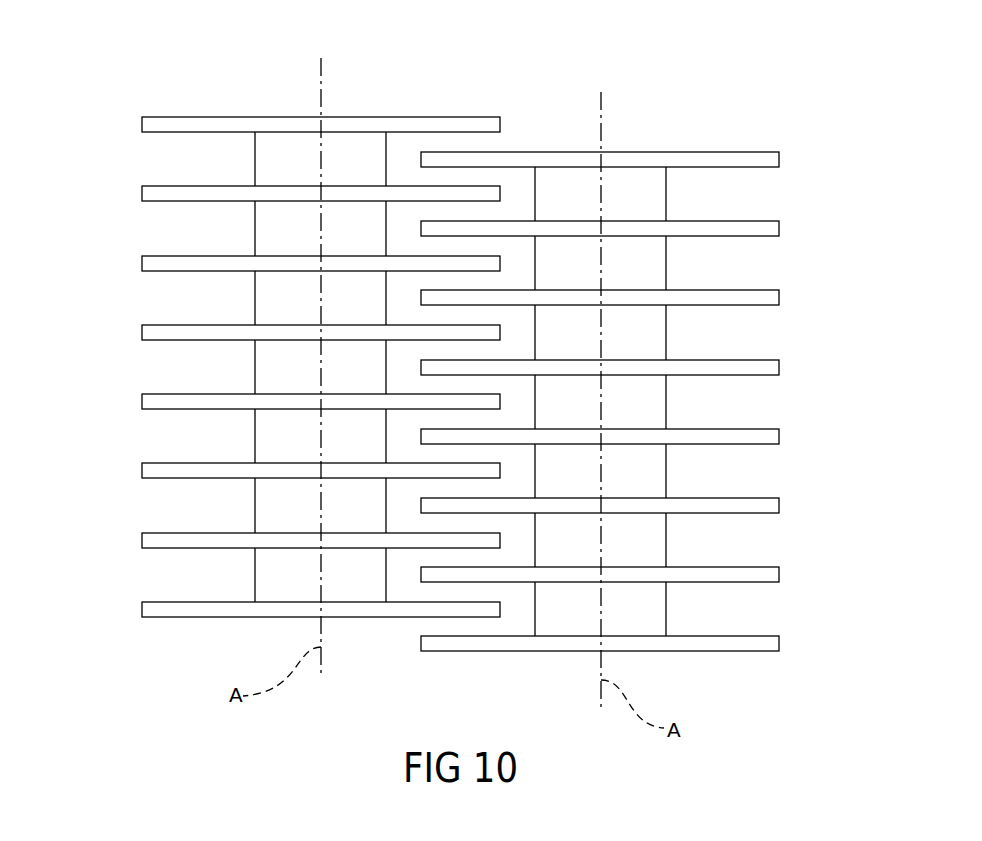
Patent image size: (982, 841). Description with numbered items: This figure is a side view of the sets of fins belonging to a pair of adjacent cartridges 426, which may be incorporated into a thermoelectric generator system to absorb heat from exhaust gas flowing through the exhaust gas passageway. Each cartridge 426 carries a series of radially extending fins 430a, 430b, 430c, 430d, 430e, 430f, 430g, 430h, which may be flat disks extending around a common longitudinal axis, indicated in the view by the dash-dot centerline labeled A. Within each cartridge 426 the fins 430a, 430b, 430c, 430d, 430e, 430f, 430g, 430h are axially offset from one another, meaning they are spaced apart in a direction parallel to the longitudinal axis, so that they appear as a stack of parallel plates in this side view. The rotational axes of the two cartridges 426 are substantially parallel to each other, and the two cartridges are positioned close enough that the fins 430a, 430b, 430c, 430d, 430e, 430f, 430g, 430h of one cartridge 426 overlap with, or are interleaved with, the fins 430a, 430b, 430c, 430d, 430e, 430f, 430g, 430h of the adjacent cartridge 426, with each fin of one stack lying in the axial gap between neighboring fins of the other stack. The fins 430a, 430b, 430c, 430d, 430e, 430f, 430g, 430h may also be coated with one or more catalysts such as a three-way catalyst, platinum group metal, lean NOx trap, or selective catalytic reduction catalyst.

The cartridge 426 is at (213, 104).
The fin 430a is at (142, 125).
The fin 430b is at (142, 194).
The fin 430c is at (142, 264).
The fin 430d is at (142, 333).
The fin 430e is at (142, 402).
The fin 430f is at (142, 471).
The fin 430g is at (142, 541).
The fin 430h is at (142, 610).